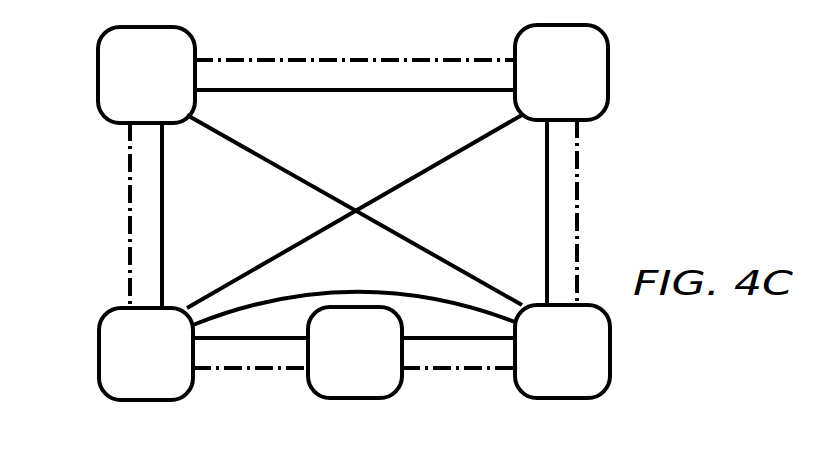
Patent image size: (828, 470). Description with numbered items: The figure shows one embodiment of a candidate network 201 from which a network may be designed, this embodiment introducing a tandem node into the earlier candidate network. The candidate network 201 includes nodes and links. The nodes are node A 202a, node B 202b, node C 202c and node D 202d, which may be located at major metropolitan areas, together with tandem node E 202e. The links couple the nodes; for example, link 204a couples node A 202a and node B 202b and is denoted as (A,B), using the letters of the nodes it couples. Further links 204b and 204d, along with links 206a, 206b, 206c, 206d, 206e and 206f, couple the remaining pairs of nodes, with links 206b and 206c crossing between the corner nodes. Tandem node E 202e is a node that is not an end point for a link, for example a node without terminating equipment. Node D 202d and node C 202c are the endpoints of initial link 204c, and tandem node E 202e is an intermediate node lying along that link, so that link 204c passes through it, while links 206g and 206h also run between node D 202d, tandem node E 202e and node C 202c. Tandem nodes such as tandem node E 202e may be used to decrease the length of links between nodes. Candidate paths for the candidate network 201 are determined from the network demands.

The candidate network 201 is at (637, 159).
The node A 202a is at (98, 78).
The node B 202b is at (610, 68).
The node C 202c is at (610, 350).
The node D 202d is at (99, 355).
The tandem node 202e is at (355, 399).
The link 204a is at (312, 58).
The link 204b is at (577, 215).
The initial link 204c is at (235, 371).
The link 204d is at (130, 215).
The link 206a is at (330, 92).
The link 206b is at (240, 150).
The link 206c is at (447, 155).
The link 206d is at (547, 215).
The link 206e is at (352, 291).
The link 206f is at (162, 218).
The link 206g is at (275, 341).
The link 206h is at (433, 341).